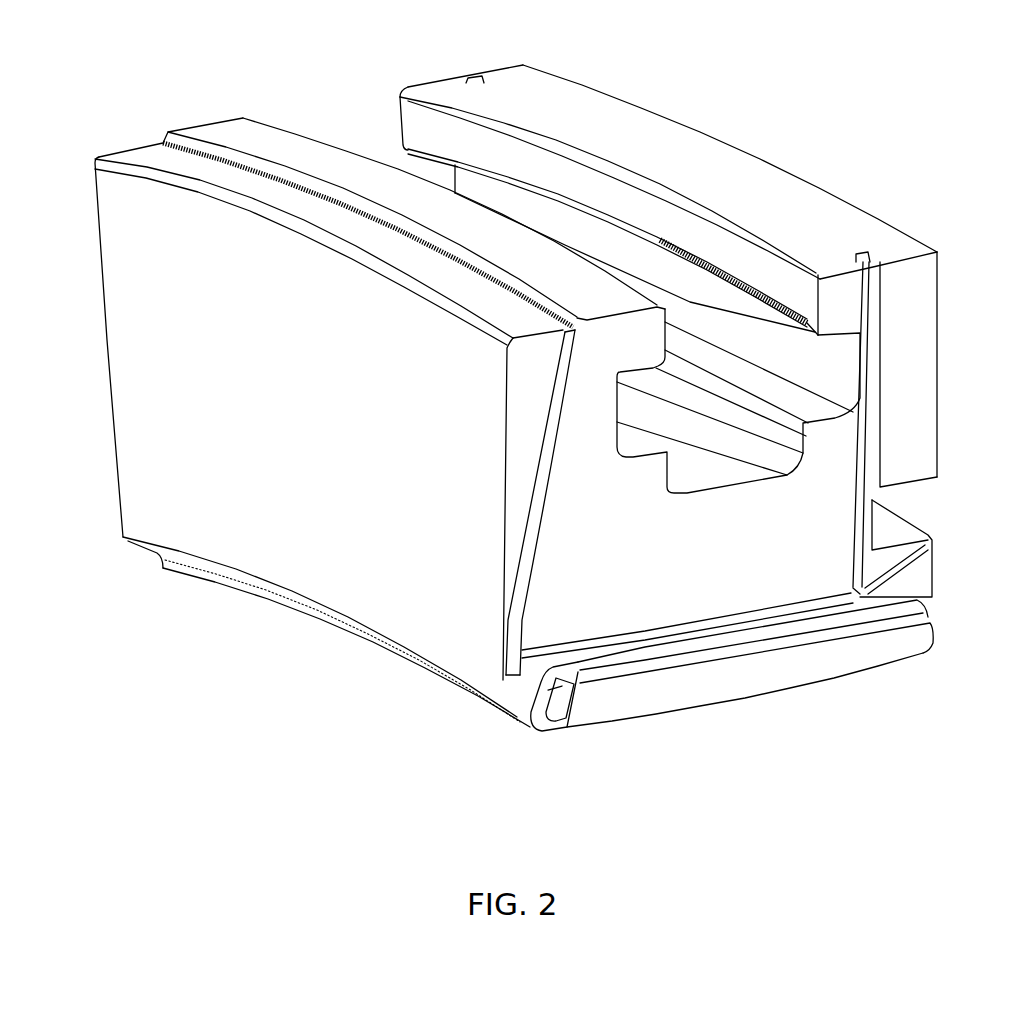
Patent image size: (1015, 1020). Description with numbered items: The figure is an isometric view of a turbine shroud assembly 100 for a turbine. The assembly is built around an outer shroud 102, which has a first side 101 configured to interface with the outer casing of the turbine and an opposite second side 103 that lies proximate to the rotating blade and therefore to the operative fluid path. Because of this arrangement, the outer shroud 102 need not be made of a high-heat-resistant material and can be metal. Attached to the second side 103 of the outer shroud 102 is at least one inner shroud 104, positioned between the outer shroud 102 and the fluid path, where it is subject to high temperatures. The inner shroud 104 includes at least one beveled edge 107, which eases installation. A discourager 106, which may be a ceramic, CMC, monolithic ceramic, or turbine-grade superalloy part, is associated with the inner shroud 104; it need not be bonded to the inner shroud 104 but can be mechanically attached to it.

The turbine shroud assembly 100 is at (148, 108).
The first side 101 is at (730, 190).
The outer shroud 102 is at (888, 398).
The second side 103 is at (527, 677).
The inner shroud 104 is at (548, 730).
The discourager 106 is at (773, 665).
The beveled edge 107 is at (528, 722).